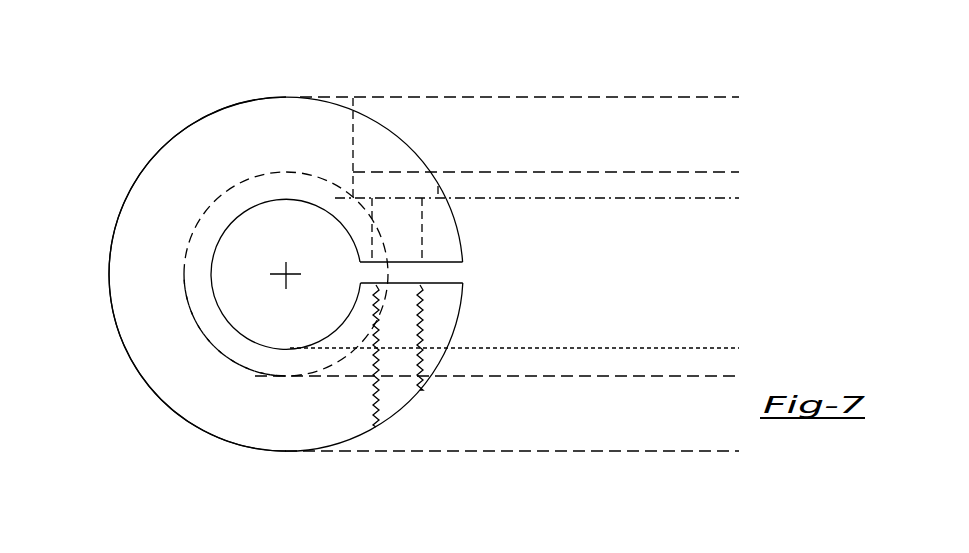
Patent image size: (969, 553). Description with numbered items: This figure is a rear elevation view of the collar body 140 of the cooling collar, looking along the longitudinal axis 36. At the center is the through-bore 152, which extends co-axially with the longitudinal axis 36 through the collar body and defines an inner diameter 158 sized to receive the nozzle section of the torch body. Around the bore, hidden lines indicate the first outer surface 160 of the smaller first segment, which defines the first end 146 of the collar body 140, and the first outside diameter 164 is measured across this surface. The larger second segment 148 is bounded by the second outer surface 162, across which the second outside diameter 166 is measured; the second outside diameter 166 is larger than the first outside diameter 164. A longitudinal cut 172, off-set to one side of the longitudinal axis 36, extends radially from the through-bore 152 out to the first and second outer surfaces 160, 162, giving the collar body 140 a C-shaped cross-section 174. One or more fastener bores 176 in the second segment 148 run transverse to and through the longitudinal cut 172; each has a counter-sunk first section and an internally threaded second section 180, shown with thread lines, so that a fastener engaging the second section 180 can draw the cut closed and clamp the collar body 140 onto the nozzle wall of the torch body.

The collar body 140 is at (172, 115).
The second segment 148 is at (230, 118).
The C-shaped cross-section 174 is at (127, 265).
The second outer surface 162 is at (221, 442).
The first end 146 is at (187, 224).
The first outer surface 160 is at (205, 342).
The longitudinal axis 36 is at (278, 266).
The through-bore 152 is at (295, 322).
The longitudinal cut 172 is at (470, 273).
The fastener bore 176 is at (377, 170).
The second section 180 is at (396, 378).
The inner diameter 158 is at (600, 198).
The first outside diameter 164 is at (669, 172).
The second outside diameter 166 is at (739, 97).